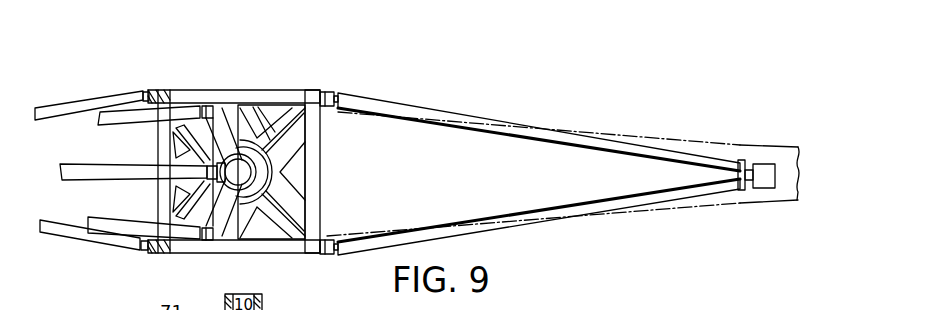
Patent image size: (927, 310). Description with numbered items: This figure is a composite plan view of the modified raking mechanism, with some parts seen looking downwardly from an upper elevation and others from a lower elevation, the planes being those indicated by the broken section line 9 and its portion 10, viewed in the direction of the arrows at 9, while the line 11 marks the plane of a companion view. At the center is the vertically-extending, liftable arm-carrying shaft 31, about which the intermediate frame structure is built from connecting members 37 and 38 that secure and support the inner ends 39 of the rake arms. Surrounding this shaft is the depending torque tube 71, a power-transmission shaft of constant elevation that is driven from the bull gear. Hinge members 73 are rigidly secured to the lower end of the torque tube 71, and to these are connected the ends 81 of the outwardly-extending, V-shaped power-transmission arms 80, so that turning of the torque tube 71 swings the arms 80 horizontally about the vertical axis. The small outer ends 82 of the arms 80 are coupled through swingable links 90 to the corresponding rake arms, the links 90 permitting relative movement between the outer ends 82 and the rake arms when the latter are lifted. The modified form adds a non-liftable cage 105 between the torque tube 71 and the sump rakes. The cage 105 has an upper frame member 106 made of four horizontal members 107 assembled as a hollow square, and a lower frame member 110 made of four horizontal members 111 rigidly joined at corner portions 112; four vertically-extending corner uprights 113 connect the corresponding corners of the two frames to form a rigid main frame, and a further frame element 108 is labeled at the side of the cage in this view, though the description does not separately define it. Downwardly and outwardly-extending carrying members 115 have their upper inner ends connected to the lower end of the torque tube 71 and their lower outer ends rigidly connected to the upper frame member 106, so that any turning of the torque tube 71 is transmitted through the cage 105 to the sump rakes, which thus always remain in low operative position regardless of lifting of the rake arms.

The section line 9- 9 is at (334, 289).
The section line portion 10- 10 is at (238, 265).
The section line 11 is at (372, 197).
The arm-carrying shaft 31 is at (225, 158).
The connecting member 37 is at (217, 106).
The connecting member 38 is at (237, 238).
The inner ends of rake arms 39 is at (203, 108).
The torque tube 71 is at (277, 104).
The hinge members 73 is at (327, 92).
The power-transmission arms 80 is at (568, 203).
The ends of power-transmission arms 81 is at (338, 96).
The outer ends of power-transmission arms 82 is at (742, 160).
The swingable links 90 is at (748, 190).
The cage 105 is at (312, 220).
The upper frame member 106 is at (312, 130).
The horizontal members 107 is at (312, 220).
The frame 108 is at (304, 92).
The lower frame member 110 is at (119, 254).
The horizontal members 111 is at (157, 228).
The corner portions 112 is at (166, 255).
The corner uprights 113 is at (150, 93).
The carrying members 115 is at (258, 105).